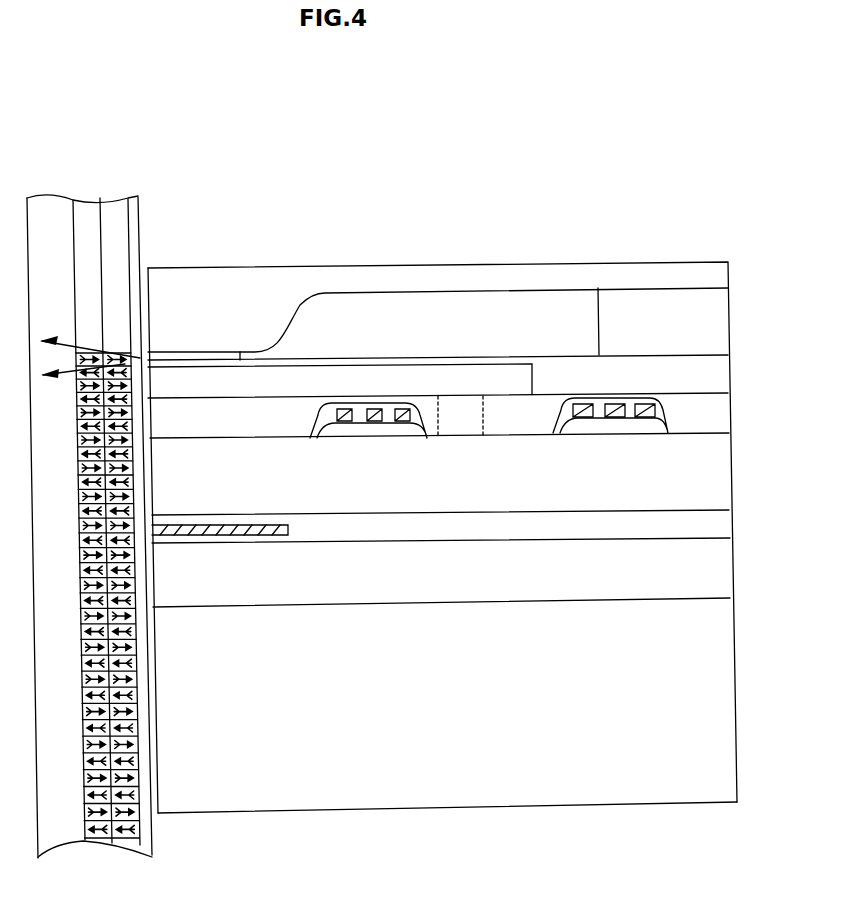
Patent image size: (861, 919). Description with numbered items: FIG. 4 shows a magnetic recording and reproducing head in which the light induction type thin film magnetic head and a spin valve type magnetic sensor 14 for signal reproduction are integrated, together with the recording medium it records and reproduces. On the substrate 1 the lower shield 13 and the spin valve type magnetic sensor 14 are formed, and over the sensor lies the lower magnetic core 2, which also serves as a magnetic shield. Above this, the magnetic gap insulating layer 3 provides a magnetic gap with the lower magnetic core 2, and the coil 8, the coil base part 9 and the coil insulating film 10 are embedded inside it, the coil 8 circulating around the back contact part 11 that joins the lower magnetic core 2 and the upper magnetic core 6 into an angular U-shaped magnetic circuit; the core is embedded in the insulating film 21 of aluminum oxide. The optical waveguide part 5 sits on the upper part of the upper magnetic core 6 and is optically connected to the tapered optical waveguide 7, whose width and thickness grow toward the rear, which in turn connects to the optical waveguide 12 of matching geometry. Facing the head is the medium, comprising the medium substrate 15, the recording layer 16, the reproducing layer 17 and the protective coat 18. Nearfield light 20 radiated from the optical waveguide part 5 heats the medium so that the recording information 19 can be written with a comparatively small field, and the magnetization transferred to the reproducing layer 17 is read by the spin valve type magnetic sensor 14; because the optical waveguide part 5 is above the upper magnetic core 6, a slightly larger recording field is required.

The substrate 1 is at (660, 689).
The lower magnetic core 2 is at (653, 473).
The magnetic gap insulating layer 3 is at (688, 415).
The optical waveguide part 5 is at (226, 355).
The upper magnetic core 6 is at (190, 383).
The tapered optical waveguide 7 is at (294, 337).
The coil 8 is at (345, 412).
The coil base part 9 is at (362, 431).
The coil insulating film 10 is at (388, 407).
The back contact part 11 is at (461, 403).
The optical waveguide 12 is at (625, 323).
The lower shield 13 is at (688, 577).
The spin valve type magnetic sensor 14 is at (288, 535).
The medium substrate 15 is at (50, 225).
The recording layer 16 is at (89, 222).
The reproducing layer 17 is at (114, 219).
The protective coat 18 is at (135, 208).
The recording information 19 is at (130, 843).
The nearfield light 20 is at (87, 357).
The insulating film 21 is at (205, 370).